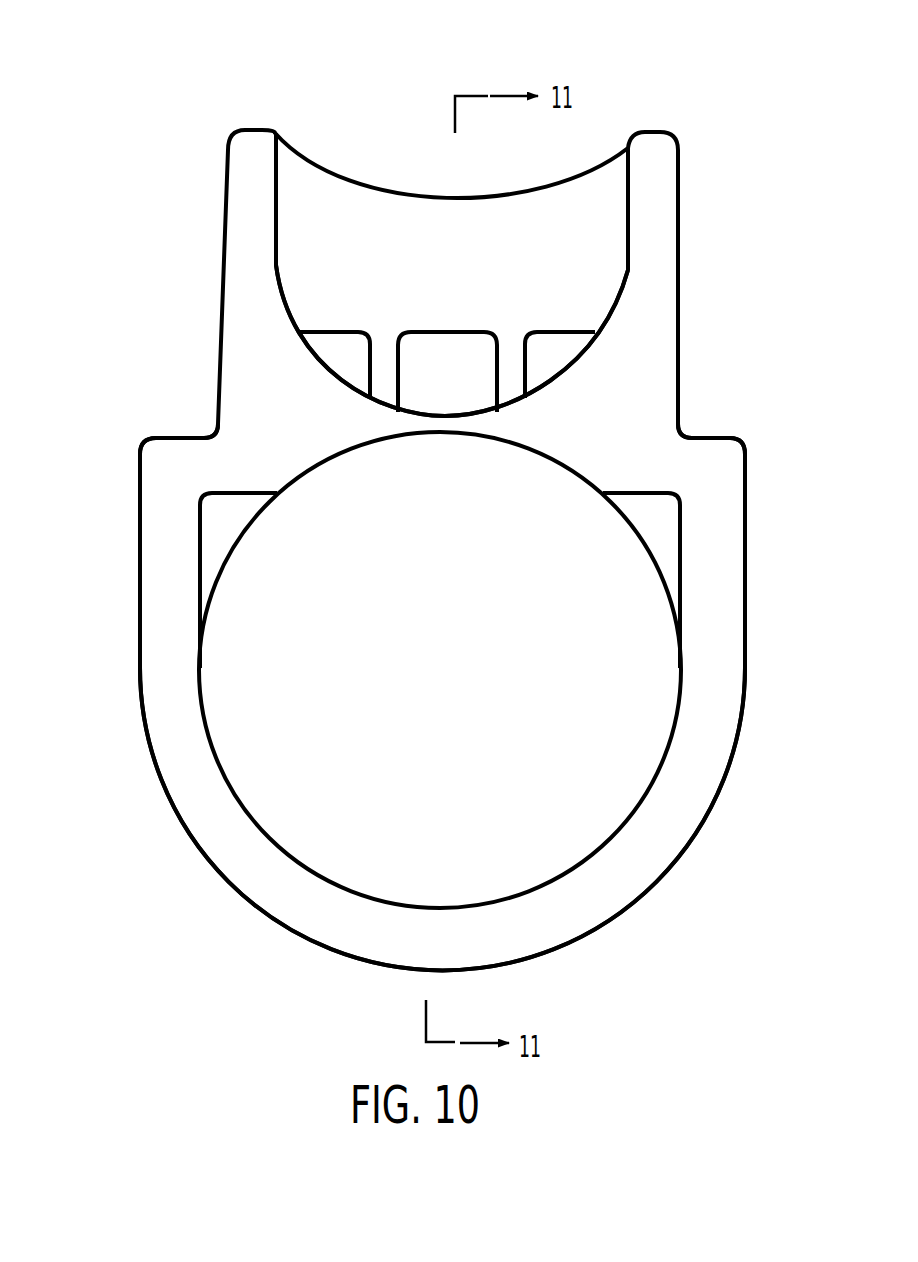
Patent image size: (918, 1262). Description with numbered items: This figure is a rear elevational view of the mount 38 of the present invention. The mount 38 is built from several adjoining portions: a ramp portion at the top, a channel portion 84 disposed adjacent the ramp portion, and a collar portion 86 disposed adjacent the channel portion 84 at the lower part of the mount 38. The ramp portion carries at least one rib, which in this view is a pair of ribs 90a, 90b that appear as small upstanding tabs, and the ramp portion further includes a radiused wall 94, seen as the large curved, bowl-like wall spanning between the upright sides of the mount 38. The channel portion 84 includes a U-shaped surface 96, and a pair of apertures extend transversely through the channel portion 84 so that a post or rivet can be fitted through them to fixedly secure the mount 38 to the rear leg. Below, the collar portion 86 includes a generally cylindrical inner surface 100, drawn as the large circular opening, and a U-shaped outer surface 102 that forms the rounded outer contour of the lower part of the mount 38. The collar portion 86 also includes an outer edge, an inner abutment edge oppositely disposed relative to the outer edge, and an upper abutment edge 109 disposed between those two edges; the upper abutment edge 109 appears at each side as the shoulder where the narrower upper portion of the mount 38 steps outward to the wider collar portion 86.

The mount 38 is at (186, 91).
The channel portion 84 is at (343, 155).
The collar portion 86 is at (118, 722).
The radiused wall 94 is at (414, 253).
The U-shaped surface 96 is at (457, 415).
The rib 90a is at (378, 373).
The rib 90b is at (513, 373).
The upper abutment edge 109 is at (166, 437).
The generally cylindrical inner surface 100 is at (228, 558).
The U-shaped outer surface 102 is at (137, 655).